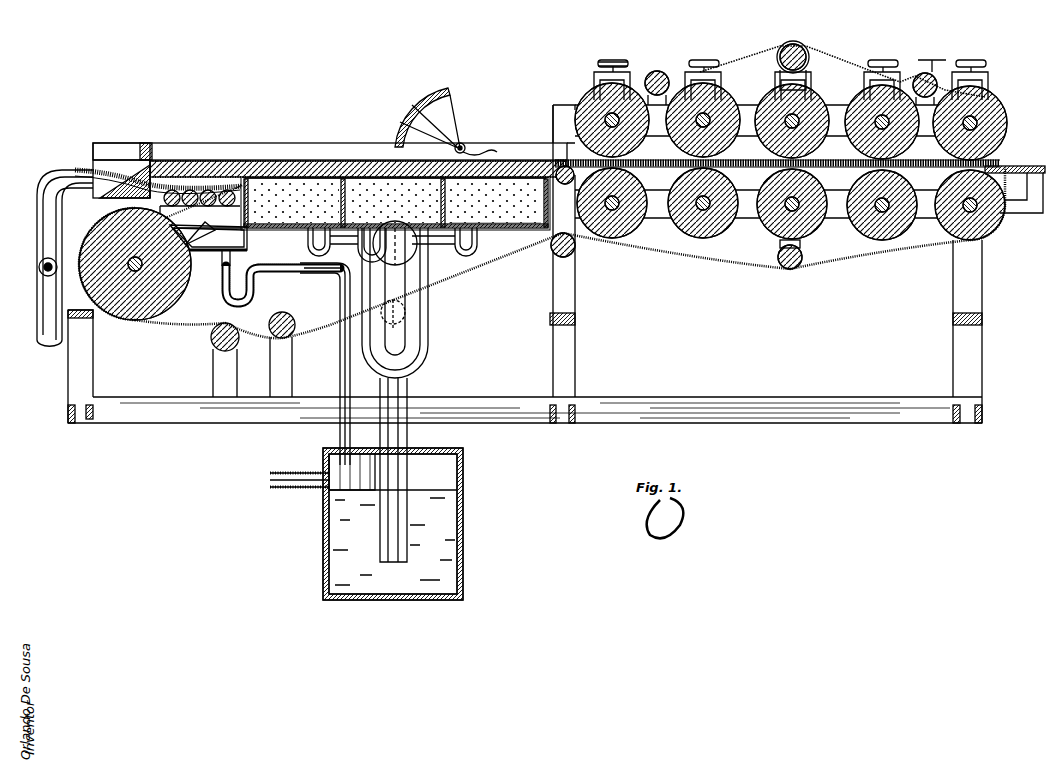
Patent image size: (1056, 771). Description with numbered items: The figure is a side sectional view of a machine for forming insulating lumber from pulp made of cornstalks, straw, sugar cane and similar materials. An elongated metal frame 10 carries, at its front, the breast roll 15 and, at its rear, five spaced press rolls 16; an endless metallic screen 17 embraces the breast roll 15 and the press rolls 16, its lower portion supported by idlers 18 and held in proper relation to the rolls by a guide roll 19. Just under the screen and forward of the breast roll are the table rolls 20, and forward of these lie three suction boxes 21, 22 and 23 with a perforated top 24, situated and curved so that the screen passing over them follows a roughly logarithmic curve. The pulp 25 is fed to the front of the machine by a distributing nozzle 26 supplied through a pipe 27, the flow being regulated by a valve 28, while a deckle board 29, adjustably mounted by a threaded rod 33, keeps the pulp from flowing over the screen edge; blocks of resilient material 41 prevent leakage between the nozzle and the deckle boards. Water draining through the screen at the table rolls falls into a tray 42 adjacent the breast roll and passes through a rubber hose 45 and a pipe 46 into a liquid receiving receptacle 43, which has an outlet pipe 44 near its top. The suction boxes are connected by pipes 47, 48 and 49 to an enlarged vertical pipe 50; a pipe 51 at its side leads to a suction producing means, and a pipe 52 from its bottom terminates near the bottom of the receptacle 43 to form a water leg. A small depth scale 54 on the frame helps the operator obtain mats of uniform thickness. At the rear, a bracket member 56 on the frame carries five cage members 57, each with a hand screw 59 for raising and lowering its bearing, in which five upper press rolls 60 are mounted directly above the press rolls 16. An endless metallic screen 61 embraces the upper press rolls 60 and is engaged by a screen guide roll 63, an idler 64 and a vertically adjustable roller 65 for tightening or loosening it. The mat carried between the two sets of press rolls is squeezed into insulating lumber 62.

The elongated metal frame 10 is at (86, 385).
The breast roll 15 is at (175, 290).
The press rolls 16 is at (670, 226).
The metallic screen 17 is at (693, 252).
The idlers 18 is at (779, 258).
The guide roll 19 is at (213, 344).
The table rolls 20 is at (176, 208).
The first suction box 21 is at (395, 203).
The second suction box 22 is at (390, 203).
The third suction box 23 is at (497, 200).
The perforated top 24 is at (474, 180).
The pulp 25 is at (235, 163).
The distributing nozzle 26 is at (134, 160).
The pipe 27 is at (37, 230).
The valve 28 is at (38, 268).
The deckle board 29 is at (302, 146).
The threaded rod 33 is at (130, 188).
The blocks of resilient material 41 is at (147, 143).
The tray 42 is at (208, 237).
The liquid receiving receptacle 43 is at (459, 492).
The outlet pipe 44 is at (300, 470).
The rubber hose 45 is at (285, 268).
The pipe 46 is at (340, 310).
The pipe 47 is at (309, 240).
The pipe 48 is at (392, 257).
The pipe 49 is at (478, 246).
The enlarged vertical pipe 50 is at (410, 315).
The pipe 51 is at (385, 320).
The pipe 52 is at (398, 388).
The depth scale 54 is at (425, 126).
The bracket member 56 is at (553, 118).
The cage members 57 is at (593, 76).
The hand screw 59 is at (629, 63).
The press rolls 60 is at (666, 136).
The endless metallic screen 61 is at (842, 66).
The insulating lumber 62 is at (1005, 164).
The screen guide roll 63 is at (800, 42).
The idler 64 is at (659, 70).
The vertically adjustable roller 65 is at (932, 74).